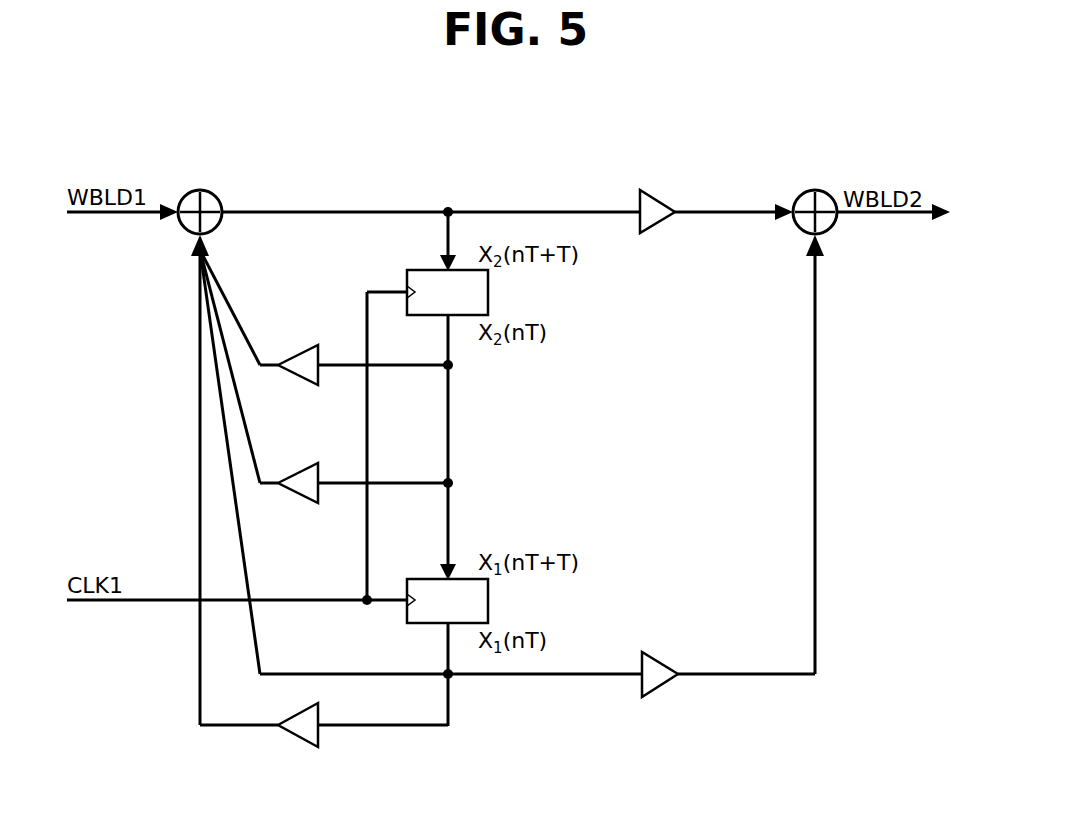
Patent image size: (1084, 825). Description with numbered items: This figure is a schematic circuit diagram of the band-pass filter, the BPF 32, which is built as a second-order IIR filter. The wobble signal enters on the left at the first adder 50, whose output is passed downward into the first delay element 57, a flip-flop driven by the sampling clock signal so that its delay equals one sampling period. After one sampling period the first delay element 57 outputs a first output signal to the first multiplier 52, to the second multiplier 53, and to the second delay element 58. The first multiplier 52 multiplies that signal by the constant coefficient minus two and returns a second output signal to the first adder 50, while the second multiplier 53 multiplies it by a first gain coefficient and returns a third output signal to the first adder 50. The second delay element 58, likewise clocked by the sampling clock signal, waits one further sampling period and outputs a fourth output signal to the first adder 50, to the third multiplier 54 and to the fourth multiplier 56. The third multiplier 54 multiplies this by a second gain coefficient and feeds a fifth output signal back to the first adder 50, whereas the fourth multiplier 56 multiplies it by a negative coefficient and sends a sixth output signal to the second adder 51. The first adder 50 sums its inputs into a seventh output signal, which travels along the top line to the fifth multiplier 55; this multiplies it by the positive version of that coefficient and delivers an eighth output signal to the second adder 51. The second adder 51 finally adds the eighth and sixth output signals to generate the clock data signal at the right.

The BPF 32 is at (726, 130).
The first adder 50 is at (215, 194).
The second adder 51 is at (800, 193).
The first multiplier 52 is at (300, 385).
The second multiplier 53 is at (300, 503).
The third multiplier 54 is at (300, 745).
The fifth multiplier 55 is at (660, 228).
The fourth multiplier 56 is at (662, 692).
The first delay element 57 is at (414, 318).
The second delay element 58 is at (414, 626).